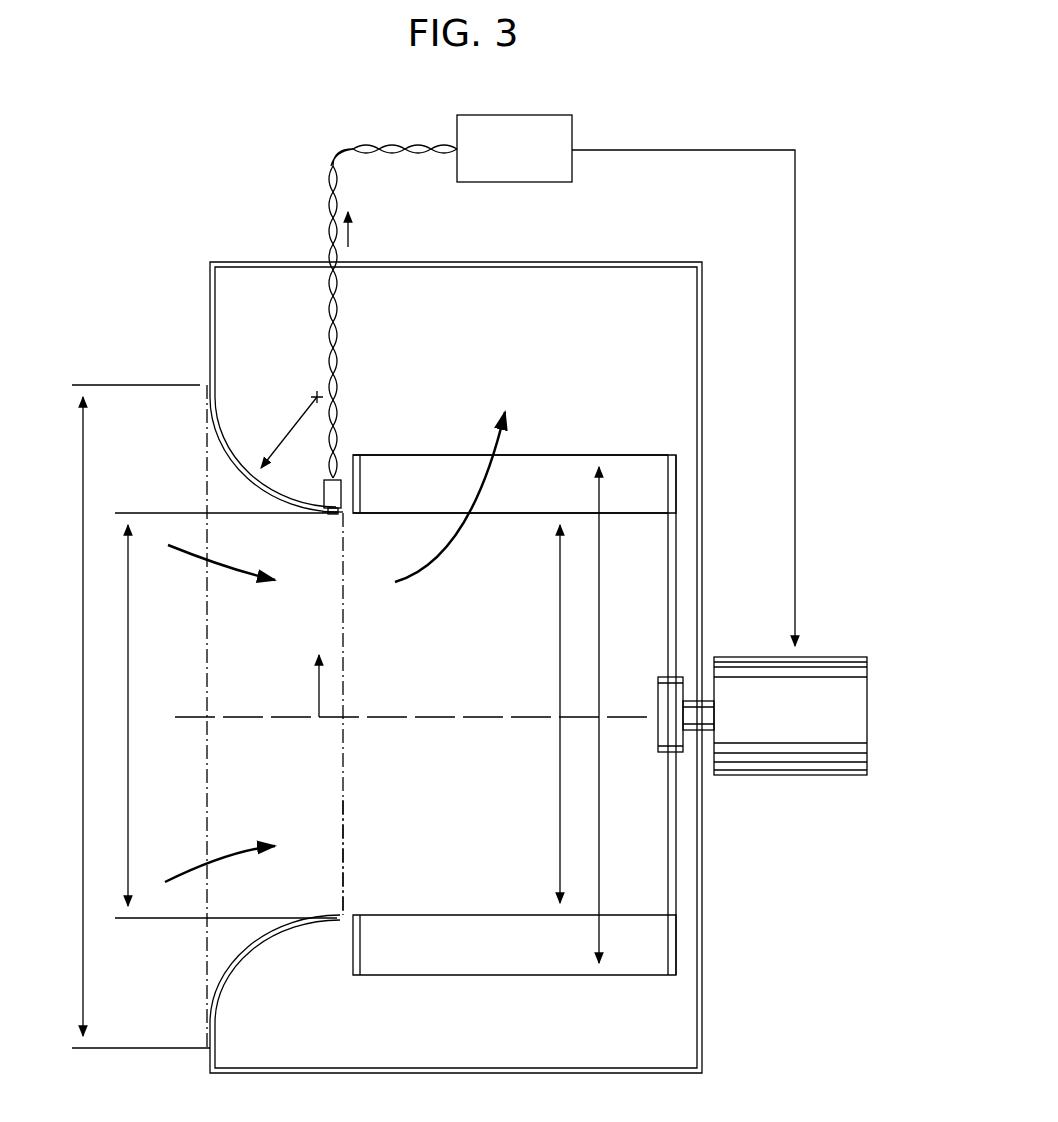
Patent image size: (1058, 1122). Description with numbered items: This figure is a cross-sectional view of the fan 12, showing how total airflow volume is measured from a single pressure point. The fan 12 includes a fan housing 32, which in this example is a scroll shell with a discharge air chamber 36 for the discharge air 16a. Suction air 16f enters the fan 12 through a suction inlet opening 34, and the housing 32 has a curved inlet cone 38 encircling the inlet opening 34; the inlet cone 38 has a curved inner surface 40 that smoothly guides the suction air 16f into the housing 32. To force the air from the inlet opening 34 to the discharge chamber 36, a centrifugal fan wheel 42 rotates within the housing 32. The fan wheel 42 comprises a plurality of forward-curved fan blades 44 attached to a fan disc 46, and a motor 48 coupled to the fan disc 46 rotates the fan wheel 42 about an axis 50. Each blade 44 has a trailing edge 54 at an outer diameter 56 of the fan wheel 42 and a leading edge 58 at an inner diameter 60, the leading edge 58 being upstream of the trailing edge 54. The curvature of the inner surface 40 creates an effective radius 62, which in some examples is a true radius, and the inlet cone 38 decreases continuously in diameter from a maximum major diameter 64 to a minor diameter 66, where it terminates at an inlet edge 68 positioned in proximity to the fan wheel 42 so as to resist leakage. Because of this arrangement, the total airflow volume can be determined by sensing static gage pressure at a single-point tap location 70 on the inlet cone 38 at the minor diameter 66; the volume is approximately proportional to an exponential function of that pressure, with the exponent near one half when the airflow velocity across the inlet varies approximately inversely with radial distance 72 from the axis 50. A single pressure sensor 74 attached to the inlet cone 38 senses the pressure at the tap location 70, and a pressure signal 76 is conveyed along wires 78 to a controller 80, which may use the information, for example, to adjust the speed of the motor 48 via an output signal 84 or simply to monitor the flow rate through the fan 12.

The fan 12 is at (184, 198).
The discharge air 16a is at (510, 420).
The suction air 16f is at (242, 578).
The fan housing 32 is at (620, 262).
The suction inlet opening 34 is at (343, 765).
The discharge air chamber 36 is at (514, 640).
The curved inlet cone 38 is at (258, 925).
The curved inner surface 40 is at (233, 967).
The centrifugal fan wheel 42 is at (407, 455).
The fan blades 44 is at (450, 455).
The fan disc 46 is at (668, 605).
The motor 48 is at (750, 657).
The axis 50 is at (395, 717).
The trailing edge 54 is at (560, 452).
The outer diameter 56 is at (601, 877).
The leading edge 58 is at (420, 513).
The inner diameter 60 is at (558, 845).
The effective radius 62 is at (272, 450).
The major diameter 64 is at (83, 478).
The minor diameter 66 is at (128, 650).
The inlet edge 68 is at (343, 828).
The single-point tap location 70 is at (325, 512).
The radial distance 72 is at (317, 683).
The pressure sensor 74 is at (318, 492).
The pressure signal 76 is at (350, 234).
The wires 78 is at (395, 148).
The controller 80 is at (502, 163).
The output signal 84 is at (795, 436).